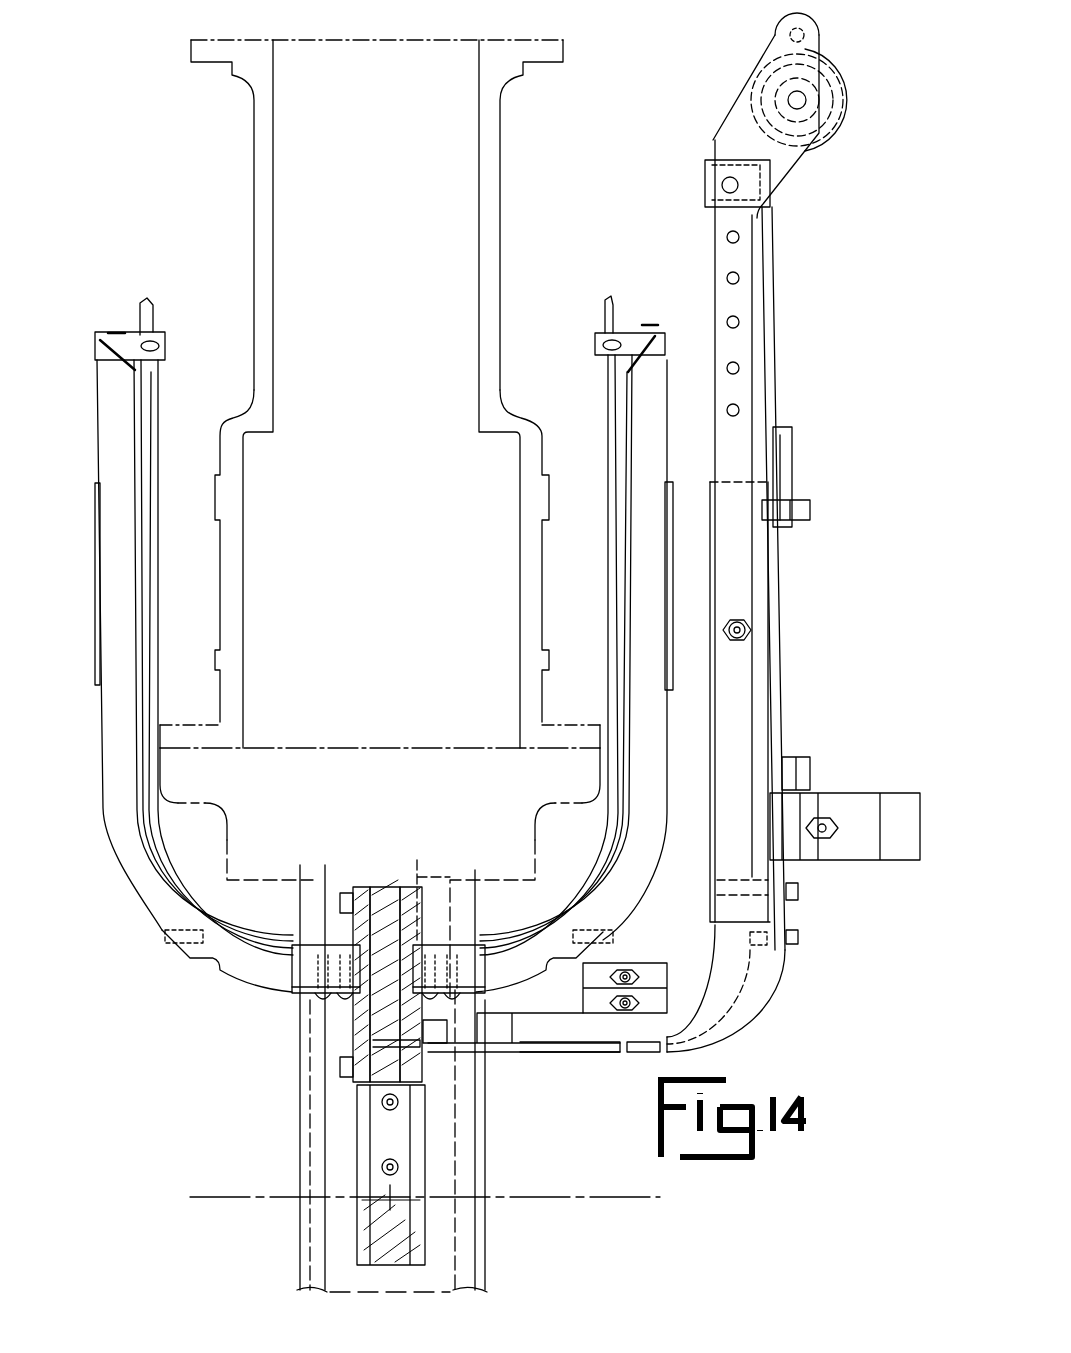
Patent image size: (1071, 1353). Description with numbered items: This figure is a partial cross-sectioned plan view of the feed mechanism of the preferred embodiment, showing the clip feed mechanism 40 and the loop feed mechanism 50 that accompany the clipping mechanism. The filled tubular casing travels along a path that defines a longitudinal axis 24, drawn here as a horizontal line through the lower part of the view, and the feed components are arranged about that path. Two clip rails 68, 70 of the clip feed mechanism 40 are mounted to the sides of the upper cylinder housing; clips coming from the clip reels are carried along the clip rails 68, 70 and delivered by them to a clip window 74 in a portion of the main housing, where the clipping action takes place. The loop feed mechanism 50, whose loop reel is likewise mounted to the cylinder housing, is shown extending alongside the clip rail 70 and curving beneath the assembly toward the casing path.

The longitudinal axis 24 is at (630, 1197).
The clip feed mechanism 40 is at (243, 983).
The loop feed mechanism 50 is at (763, 1023).
The clip rail 68 is at (113, 600).
The clip rail 70 is at (750, 688).
The clip window 74 is at (345, 945).